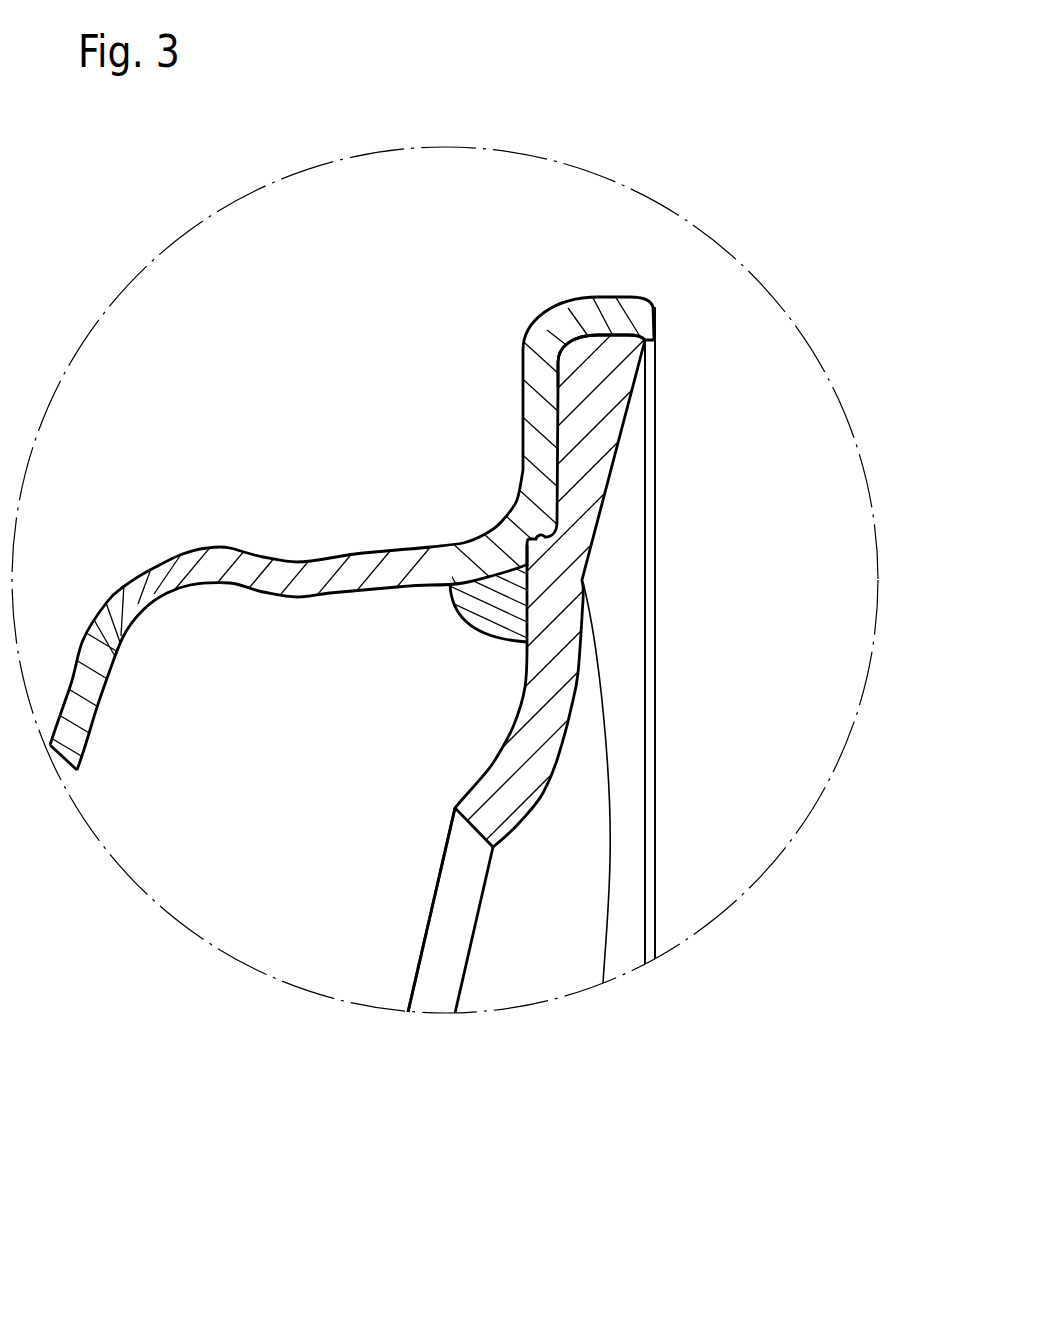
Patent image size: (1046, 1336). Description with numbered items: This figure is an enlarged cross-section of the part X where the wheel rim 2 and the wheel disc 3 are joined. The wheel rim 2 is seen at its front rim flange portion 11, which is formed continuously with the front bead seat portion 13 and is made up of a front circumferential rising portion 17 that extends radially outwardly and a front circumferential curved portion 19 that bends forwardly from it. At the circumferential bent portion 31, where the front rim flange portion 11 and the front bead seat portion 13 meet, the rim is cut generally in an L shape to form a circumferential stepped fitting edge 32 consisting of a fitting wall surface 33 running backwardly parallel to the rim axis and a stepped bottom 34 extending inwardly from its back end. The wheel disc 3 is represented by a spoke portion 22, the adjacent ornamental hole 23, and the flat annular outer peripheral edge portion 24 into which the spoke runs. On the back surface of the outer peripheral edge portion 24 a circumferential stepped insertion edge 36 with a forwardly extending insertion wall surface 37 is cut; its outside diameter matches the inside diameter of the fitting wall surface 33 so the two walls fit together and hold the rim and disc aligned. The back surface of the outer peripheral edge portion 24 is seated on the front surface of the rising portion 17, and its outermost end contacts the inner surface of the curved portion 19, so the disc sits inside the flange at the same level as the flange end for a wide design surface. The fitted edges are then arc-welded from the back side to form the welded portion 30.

The wheel rim 2 is at (77, 718).
The wheel disc 3 is at (464, 886).
The front rim flange portion 11 is at (562, 323).
The front bead seat portion 13 is at (356, 572).
The front circumferential rising portion 17 is at (530, 410).
The front circumferential curved portion 19 is at (635, 315).
The spoke portion 22 is at (562, 882).
The ornamental hole 23 is at (447, 963).
The outer peripheral edge portion 24 is at (603, 402).
The welded portion 30 is at (495, 615).
The circumferential bent portion 31 is at (512, 548).
The circumferential stepped fitting edge 32 is at (540, 530).
The fitting wall surface 33 is at (536, 547).
The stepped bottom 34 is at (537, 545).
The circumferential stepped insertion edge 36 is at (522, 535).
The insertion wall surface 37 is at (548, 525).
The part X is at (613, 182).